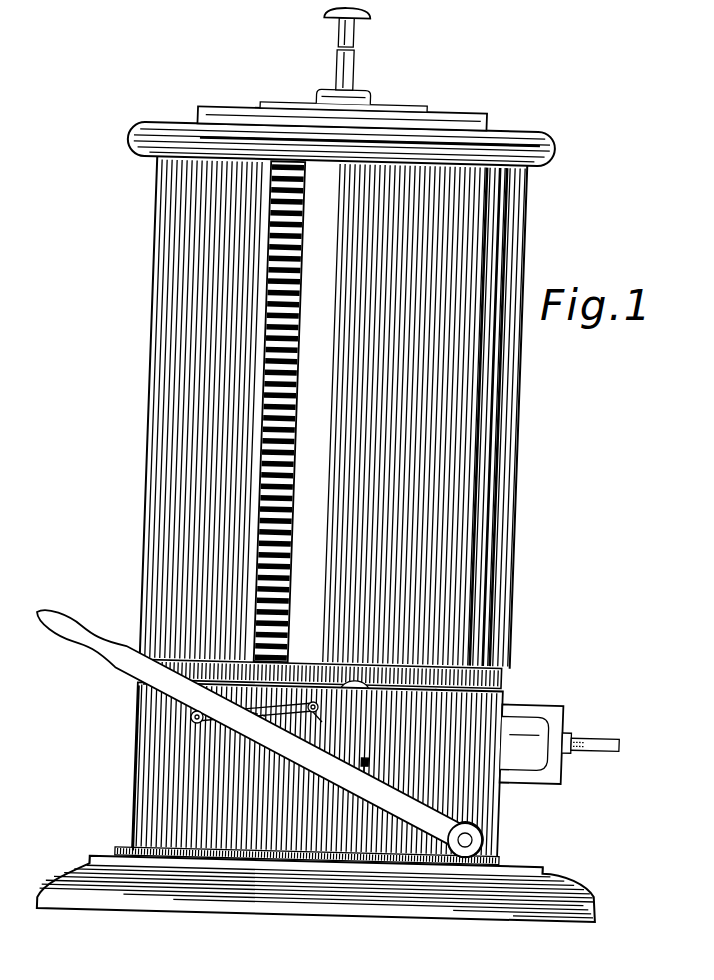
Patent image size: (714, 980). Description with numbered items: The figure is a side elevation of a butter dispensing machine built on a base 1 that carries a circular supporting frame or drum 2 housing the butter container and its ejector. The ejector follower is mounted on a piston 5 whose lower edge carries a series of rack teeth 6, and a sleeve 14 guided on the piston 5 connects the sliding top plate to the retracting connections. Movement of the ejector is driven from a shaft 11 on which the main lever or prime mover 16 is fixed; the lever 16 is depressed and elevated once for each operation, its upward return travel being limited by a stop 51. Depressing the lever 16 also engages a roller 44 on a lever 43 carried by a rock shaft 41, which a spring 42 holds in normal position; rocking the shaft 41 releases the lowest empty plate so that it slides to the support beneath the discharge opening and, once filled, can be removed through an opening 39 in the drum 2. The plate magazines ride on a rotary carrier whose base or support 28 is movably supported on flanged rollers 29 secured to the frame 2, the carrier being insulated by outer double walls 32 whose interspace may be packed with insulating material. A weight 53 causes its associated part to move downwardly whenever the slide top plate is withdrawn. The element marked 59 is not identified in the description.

The base 1 is at (317, 888).
The circular supporting frame or drum 2 is at (167, 790).
The piston 5 is at (598, 741).
The rack teeth 6 is at (584, 760).
The shaft 11 is at (478, 838).
The sleeve 14 is at (528, 741).
The main lever or prime mover 16 is at (327, 767).
The base or support 28 is at (305, 677).
The flanged rollers 29 is at (361, 684).
The outer double walls 32 is at (334, 412).
The opening 39 is at (137, 757).
The rock shaft 41 is at (328, 727).
The spring 42 is at (304, 719).
The lever 43 is at (268, 714).
The roller 44 is at (190, 718).
The stop 51 is at (366, 760).
The weight 53 is at (352, 60).
The bracket 59 is at (536, 708).